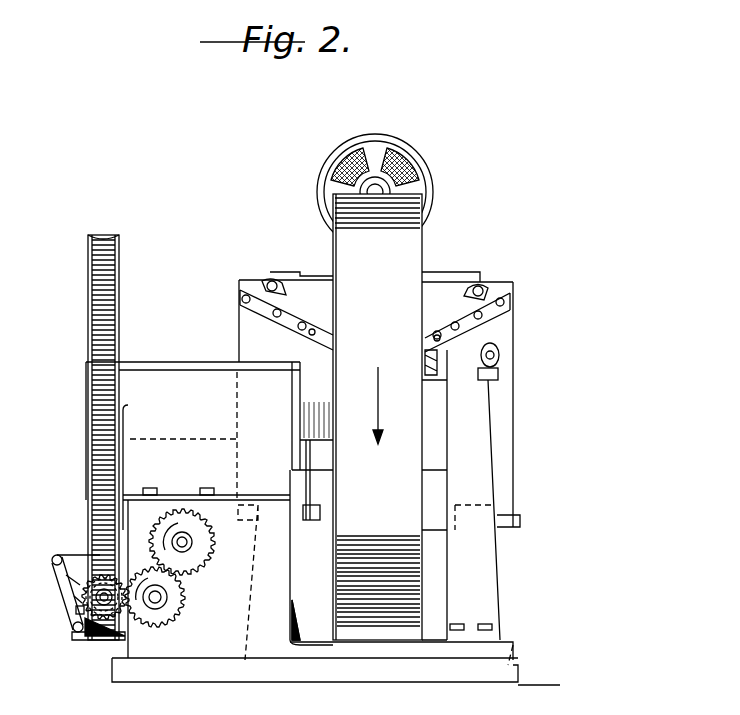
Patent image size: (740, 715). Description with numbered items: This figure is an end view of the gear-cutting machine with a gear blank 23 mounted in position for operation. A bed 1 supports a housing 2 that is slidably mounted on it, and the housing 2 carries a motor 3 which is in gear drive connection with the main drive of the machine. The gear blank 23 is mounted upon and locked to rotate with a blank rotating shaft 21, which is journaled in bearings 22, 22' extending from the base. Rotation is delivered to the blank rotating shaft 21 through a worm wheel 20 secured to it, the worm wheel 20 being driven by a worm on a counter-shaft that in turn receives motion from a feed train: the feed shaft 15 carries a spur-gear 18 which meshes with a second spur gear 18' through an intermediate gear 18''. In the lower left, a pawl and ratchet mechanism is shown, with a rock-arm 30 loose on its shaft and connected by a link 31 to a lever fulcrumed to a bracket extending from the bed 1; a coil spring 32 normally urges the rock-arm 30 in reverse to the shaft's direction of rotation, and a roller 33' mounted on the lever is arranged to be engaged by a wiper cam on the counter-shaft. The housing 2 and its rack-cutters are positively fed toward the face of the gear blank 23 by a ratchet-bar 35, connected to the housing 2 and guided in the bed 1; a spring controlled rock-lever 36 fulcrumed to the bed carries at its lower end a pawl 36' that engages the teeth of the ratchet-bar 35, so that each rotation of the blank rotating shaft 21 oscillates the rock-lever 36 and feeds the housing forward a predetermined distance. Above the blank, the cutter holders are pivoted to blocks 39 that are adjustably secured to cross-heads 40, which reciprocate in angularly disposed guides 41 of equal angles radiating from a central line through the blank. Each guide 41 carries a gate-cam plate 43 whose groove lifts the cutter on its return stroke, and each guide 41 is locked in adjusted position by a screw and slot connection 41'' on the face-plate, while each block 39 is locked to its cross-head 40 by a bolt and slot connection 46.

The bed 1 is at (490, 652).
The housing 2 is at (510, 498).
The motor 3 is at (430, 200).
The shaft 15 is at (192, 542).
The spur-gear 18 is at (202, 542).
The spur gear 18' is at (97, 620).
The intermediate gear 18'' is at (177, 597).
The worm wheel 20 is at (88, 468).
The blank rotating shaft 21 is at (312, 416).
The bearing 22 is at (193, 511).
The bearing 22' is at (461, 495).
The gear blank 23 is at (377, 417).
The rock-arm 30 is at (80, 557).
The link 31 is at (64, 577).
The coil spring 32 is at (75, 600).
The roller 33' is at (62, 622).
The ratchet-bar 35 is at (305, 525).
The rock-lever 36 is at (336, 480).
The pawl 36' is at (336, 515).
The block 39 is at (498, 374).
The cross-head 40 is at (500, 330).
The guide 41 is at (382, 305).
The screw and slot connection 41'' is at (389, 266).
The plate 43 is at (437, 334).
The bolt and slot connection 46 is at (500, 355).